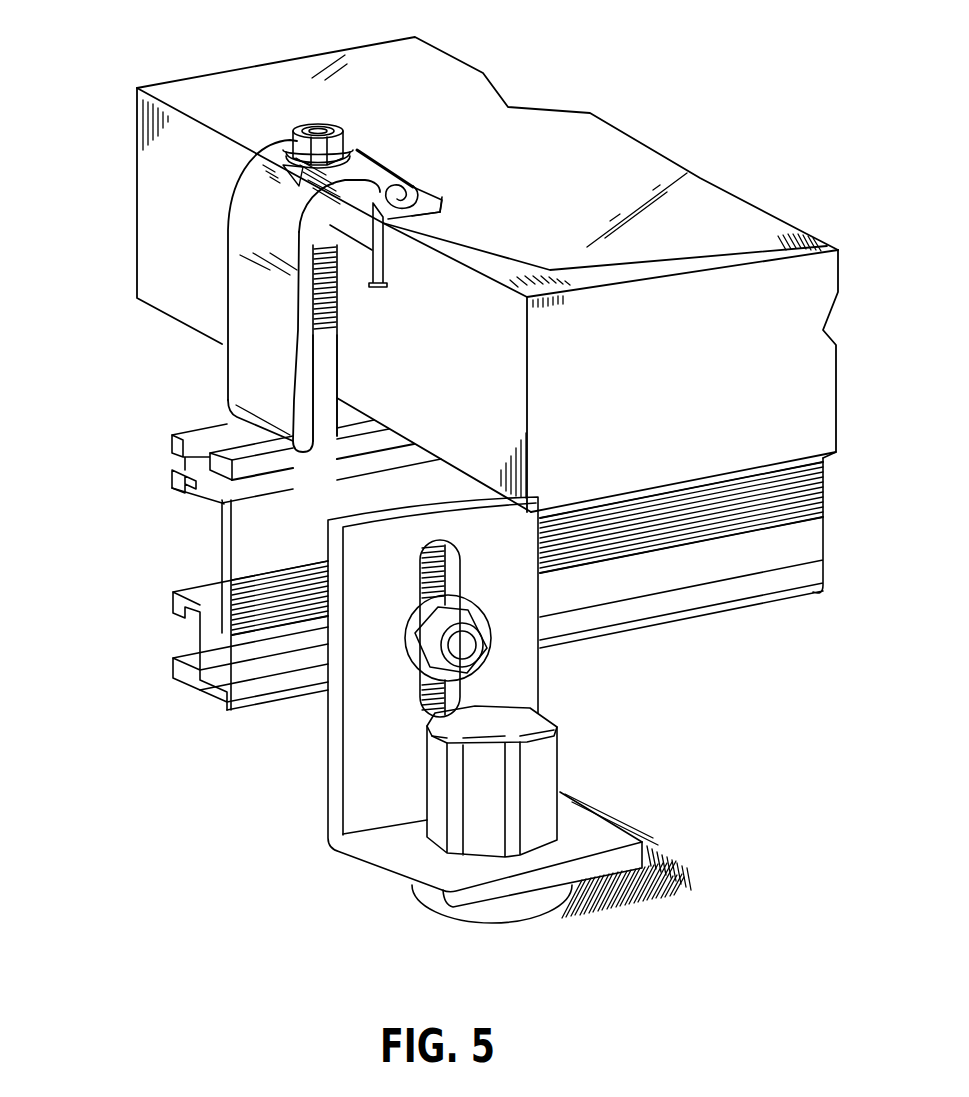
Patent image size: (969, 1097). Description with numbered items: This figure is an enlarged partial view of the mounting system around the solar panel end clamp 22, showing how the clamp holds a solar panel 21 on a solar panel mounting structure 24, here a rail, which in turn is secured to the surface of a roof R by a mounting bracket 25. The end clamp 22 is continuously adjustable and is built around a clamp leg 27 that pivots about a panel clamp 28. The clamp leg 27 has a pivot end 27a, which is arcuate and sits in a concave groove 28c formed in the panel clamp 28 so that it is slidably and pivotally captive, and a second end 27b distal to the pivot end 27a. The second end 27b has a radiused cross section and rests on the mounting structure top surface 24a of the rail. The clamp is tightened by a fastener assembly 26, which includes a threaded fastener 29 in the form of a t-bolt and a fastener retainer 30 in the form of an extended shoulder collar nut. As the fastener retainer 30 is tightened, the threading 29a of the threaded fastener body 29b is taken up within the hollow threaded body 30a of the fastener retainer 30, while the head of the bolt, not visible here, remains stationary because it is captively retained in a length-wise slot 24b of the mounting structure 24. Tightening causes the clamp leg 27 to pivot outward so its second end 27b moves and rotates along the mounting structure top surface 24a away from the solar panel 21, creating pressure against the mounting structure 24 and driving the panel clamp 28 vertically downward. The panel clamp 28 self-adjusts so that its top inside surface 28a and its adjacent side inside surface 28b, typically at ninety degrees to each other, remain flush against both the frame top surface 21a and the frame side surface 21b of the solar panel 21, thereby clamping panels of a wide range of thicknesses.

The solar panel 21 is at (357, 46).
The frame top surface 21a is at (164, 90).
The frame side surface 21b is at (138, 150).
The solar panel end clamp 22 is at (398, 150).
The solar panel mounting structure 24 is at (222, 553).
The mounting structure top surface 24a is at (182, 432).
The length-wise slot 24b is at (182, 470).
The mounting bracket 25 is at (546, 673).
The fastener assembly 26 is at (316, 116).
The clamp leg 27 is at (229, 238).
The pivot end 27a is at (410, 186).
The second end 27b is at (248, 416).
The panel clamp 28 is at (432, 190).
The top inside surface 28a is at (443, 210).
The side inside surface 28b is at (386, 283).
The concave groove 28c is at (414, 216).
The threaded fastener 29 is at (337, 350).
The threading 29a is at (338, 296).
The threaded fastener body 29b is at (339, 378).
The fastener retainer 30 is at (299, 127).
The hollow threaded body 30a is at (344, 237).
The roof R is at (629, 856).